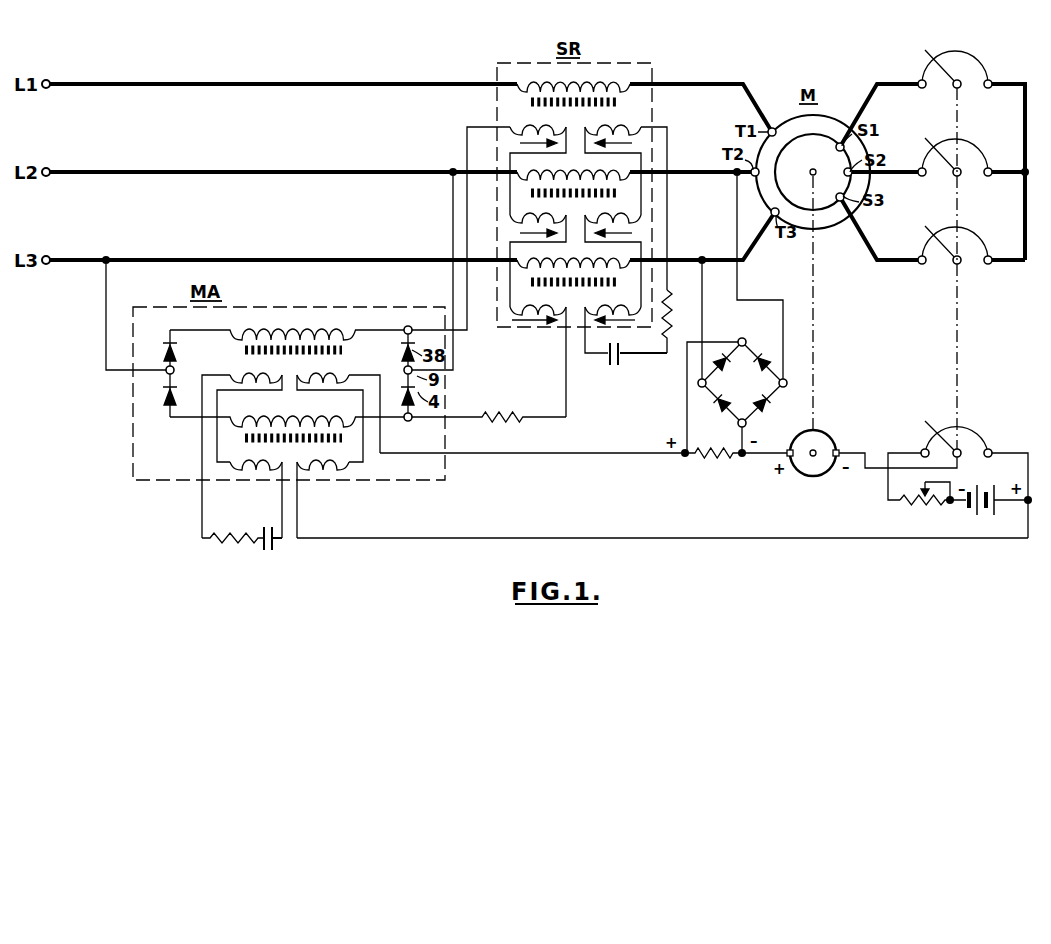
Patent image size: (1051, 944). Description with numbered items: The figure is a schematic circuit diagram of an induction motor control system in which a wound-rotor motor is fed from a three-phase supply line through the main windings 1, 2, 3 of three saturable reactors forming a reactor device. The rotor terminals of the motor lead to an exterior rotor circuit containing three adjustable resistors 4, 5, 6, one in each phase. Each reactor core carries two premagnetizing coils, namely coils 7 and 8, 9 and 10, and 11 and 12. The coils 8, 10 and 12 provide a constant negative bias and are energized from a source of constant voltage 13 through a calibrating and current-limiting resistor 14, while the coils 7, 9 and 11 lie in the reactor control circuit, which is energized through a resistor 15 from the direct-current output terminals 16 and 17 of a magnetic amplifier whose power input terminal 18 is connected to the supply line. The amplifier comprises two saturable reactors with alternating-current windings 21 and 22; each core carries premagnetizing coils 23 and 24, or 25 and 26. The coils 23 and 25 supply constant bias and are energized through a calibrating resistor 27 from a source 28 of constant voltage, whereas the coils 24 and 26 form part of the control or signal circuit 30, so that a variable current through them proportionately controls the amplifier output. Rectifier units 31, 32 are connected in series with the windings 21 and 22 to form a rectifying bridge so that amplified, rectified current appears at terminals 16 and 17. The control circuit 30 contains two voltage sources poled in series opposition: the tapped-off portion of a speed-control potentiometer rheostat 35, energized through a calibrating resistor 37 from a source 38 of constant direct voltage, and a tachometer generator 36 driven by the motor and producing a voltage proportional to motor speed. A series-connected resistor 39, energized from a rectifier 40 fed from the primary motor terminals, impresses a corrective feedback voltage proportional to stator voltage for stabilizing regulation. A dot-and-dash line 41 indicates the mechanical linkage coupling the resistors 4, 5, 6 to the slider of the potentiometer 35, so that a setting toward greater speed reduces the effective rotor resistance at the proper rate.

The main winding 1 is at (528, 80).
The main winding 2 is at (617, 170).
The main winding 3 is at (619, 259).
The adjustable resistor 4 is at (980, 70).
The adjustable resistor 5 is at (980, 158).
The adjustable resistor 6 is at (980, 246).
The premagnetizing coil 7 is at (632, 124).
The premagnetizing coil 8 is at (516, 124).
The premagnetizing coil 9 is at (626, 221).
The premagnetizing coil 10 is at (530, 220).
The premagnetizing coil 11 is at (620, 320).
The premagnetizing coil 12 is at (534, 318).
The source of constant voltage 13 is at (613, 364).
The calibrating and current-limiting resistor 14 is at (670, 306).
The resistor 15 is at (499, 410).
The direct-current output terminal 16 is at (406, 324).
The direct-current output terminal 17 is at (408, 422).
The power input terminal 18 is at (166, 372).
The alternating-current winding 21 is at (300, 318).
The alternating-current winding 22 is at (244, 420).
The premagnetizing coil 23 is at (232, 373).
The premagnetizing coil 24 is at (348, 372).
The premagnetizing coil 25 is at (252, 472).
The premagnetizing coil 26 is at (318, 472).
The calibrating resistor 27 is at (236, 546).
The source of constant voltage 28 is at (270, 548).
The control circuit 30 is at (570, 458).
The rectifier unit 31 is at (164, 344).
The rectifier unit 32 is at (166, 400).
The potentiometer rheostat 35 is at (982, 442).
The tachometer generator 36 is at (808, 472).
The calibrating resistor 37 is at (916, 506).
The source of constant direct voltage 38 is at (968, 508).
The series-connected resistor 39 is at (724, 461).
The rectifier 40 is at (753, 391).
The dot-and-dash line 41 is at (959, 352).